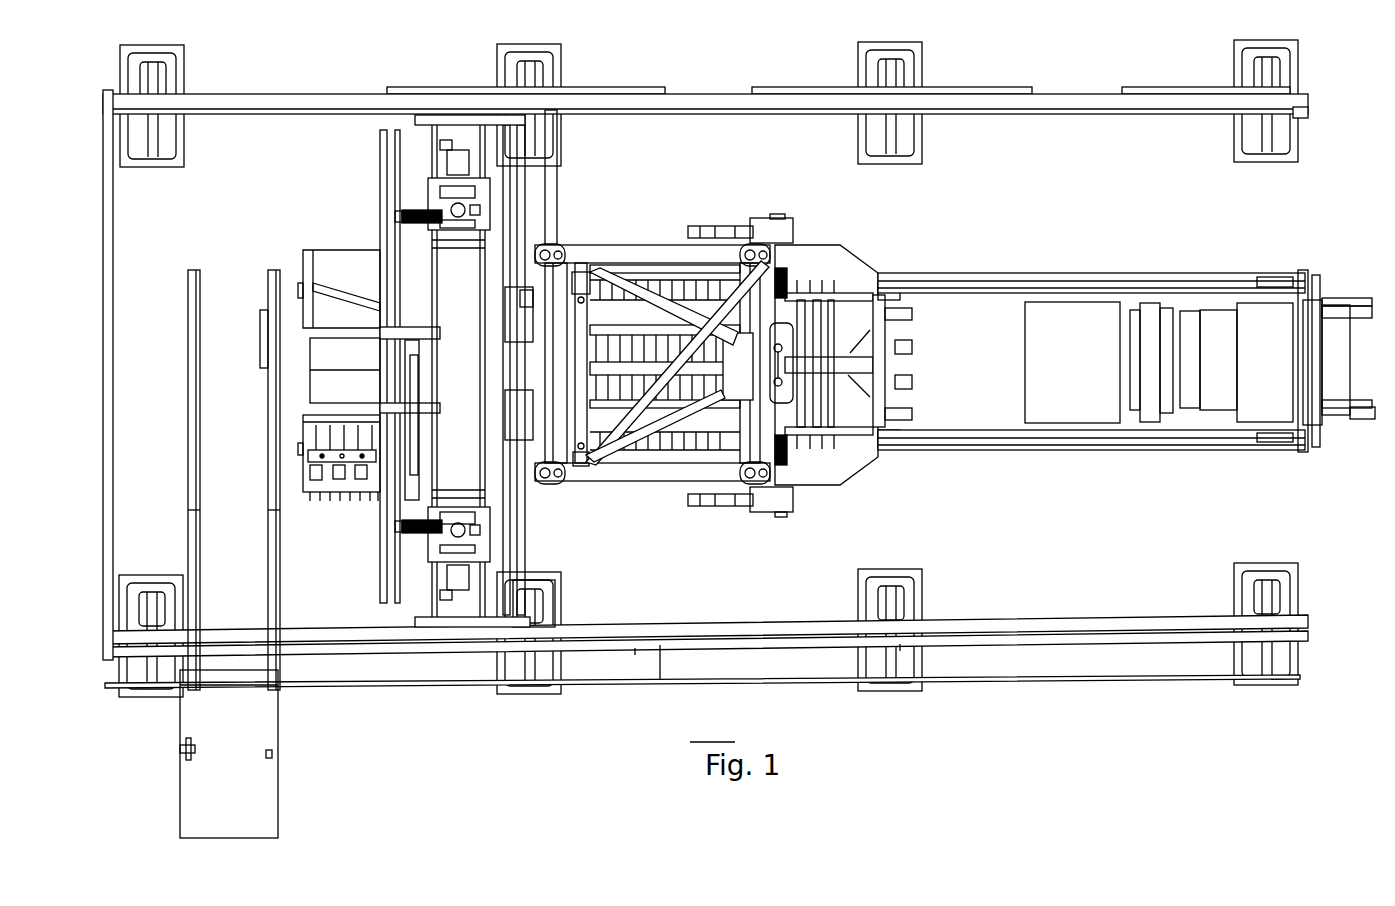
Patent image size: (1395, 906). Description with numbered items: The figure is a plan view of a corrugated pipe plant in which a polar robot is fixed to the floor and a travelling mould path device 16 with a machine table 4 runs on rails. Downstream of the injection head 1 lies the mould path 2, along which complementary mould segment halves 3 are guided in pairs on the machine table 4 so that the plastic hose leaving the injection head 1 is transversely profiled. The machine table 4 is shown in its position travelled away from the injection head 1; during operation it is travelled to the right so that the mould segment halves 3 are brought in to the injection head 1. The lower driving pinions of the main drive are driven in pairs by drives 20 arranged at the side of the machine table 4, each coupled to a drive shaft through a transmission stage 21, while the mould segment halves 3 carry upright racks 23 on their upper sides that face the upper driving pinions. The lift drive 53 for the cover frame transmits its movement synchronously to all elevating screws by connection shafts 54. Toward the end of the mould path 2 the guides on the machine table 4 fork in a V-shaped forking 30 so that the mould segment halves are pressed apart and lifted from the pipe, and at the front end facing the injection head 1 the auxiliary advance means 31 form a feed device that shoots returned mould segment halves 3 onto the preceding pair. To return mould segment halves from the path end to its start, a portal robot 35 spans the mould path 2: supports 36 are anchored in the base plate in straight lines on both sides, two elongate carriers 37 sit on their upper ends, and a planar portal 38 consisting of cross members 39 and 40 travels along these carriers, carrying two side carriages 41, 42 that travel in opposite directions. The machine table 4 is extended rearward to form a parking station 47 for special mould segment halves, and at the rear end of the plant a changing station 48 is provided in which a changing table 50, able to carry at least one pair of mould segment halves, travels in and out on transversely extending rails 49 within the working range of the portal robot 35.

The injection head 1 is at (1120, 428).
The mould path 2 is at (669, 376).
The mould segment halves 3 is at (613, 395).
The machine table 4 is at (836, 267).
The mould path device 16 is at (1072, 353).
The drives 20 is at (712, 506).
The transmission stage 21 is at (778, 510).
The racks 23 is at (830, 357).
The V-shaped forking 30 is at (462, 318).
The auxiliary advance means 31 is at (932, 402).
The portal robot 35 is at (705, 367).
The supports 36 is at (898, 74).
The elongate carriers 37 is at (777, 102).
The portal 38 is at (457, 368).
The cross member 39 is at (495, 253).
The cross member 40 is at (432, 258).
The side carriage 41 is at (503, 543).
The side carriage 42 is at (500, 190).
The parking station 47 is at (336, 514).
The changing station 48 is at (234, 454).
The rails 49 is at (268, 420).
The changing table 50 is at (272, 730).
The lift drive 53 is at (613, 270).
The connection shafts 54 is at (647, 256).